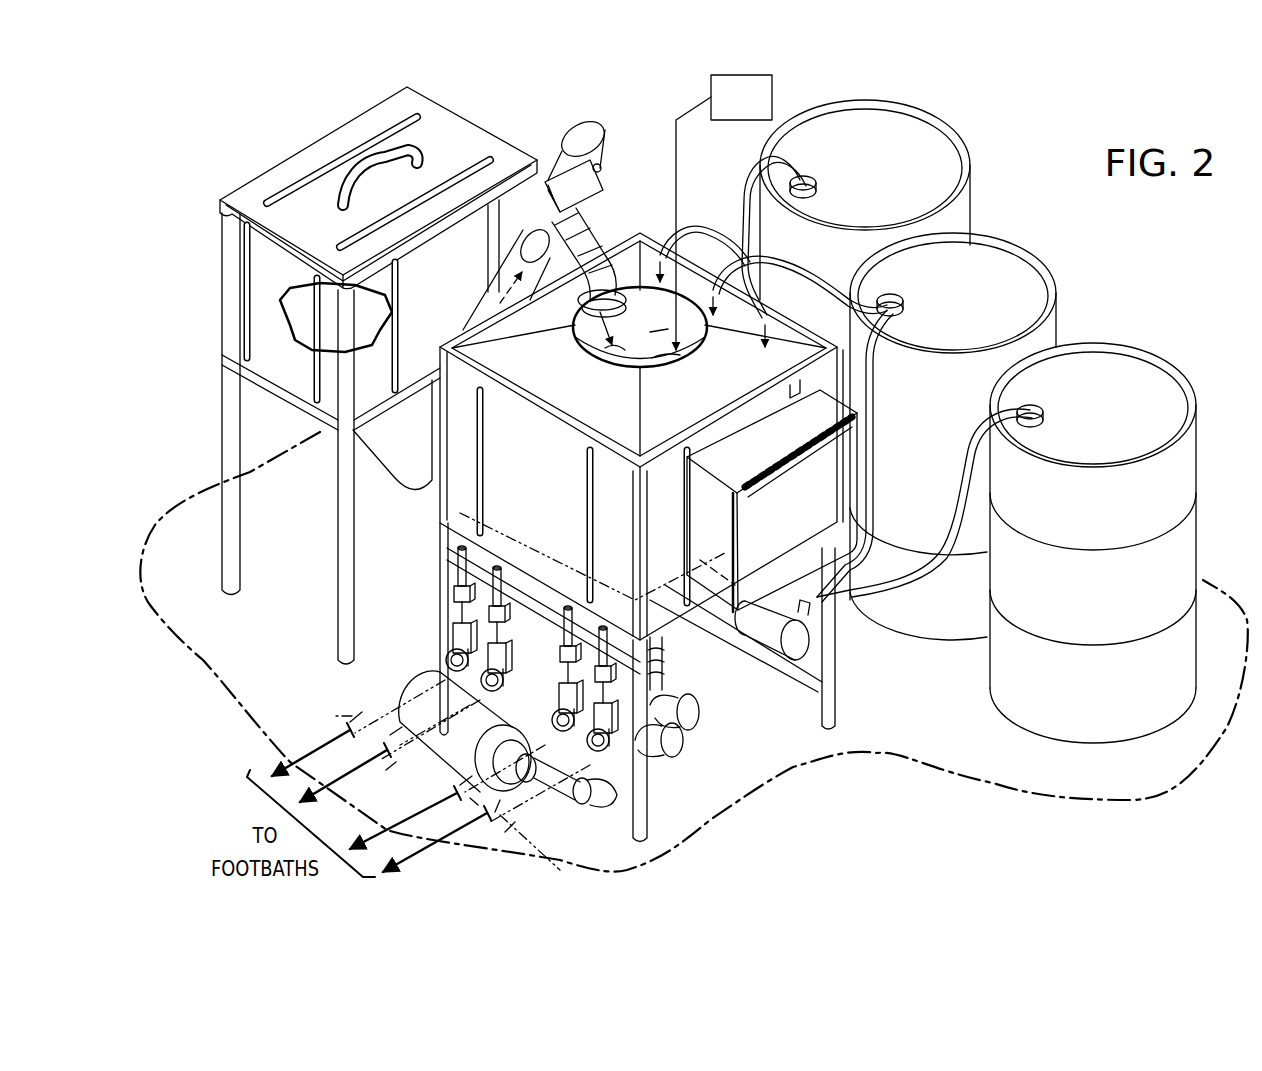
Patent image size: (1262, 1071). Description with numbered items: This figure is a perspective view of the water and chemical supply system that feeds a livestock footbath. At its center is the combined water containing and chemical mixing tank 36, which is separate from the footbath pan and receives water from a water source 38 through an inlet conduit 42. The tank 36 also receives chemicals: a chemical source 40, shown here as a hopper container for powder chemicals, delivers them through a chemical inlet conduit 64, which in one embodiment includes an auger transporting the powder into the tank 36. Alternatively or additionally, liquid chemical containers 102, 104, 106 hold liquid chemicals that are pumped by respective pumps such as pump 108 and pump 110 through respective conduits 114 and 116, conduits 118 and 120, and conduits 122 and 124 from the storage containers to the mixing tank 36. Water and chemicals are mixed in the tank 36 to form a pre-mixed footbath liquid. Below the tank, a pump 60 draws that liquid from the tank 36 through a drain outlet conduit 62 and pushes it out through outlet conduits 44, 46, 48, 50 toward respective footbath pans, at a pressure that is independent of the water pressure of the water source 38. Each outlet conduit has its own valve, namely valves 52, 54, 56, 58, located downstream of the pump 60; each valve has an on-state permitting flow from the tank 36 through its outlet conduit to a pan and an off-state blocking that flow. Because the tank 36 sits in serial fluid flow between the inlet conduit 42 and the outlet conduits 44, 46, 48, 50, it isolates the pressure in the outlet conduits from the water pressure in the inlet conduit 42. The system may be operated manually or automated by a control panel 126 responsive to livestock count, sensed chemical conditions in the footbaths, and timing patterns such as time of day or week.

The combined water containing and chemical mixing tank 36 is at (417, 525).
The water source 38 is at (683, 84).
The chemical source 40 is at (180, 277).
The inlet conduit 42 is at (647, 125).
The outlet conduit 44 is at (372, 706).
The outlet conduit 46 is at (416, 757).
The outlet conduit 48 is at (457, 823).
The outlet conduit 50 is at (515, 825).
The valve 52 is at (418, 660).
The valve 54 is at (499, 665).
The valve 56 is at (530, 708).
The valve 58 is at (597, 745).
The pump 60 is at (420, 782).
The drain outlet conduit 62 is at (660, 750).
The chemical inlet conduit 64 is at (572, 302).
The liquid chemical container 102 is at (1157, 350).
The liquid chemical container 104 is at (973, 434).
The liquid chemical container 106 is at (964, 137).
The pump 108 is at (760, 632).
The pump 110 is at (698, 640).
The conduit 114 is at (972, 478).
The conduit 116 is at (875, 466).
The conduit 118 is at (895, 295).
The conduit 120 is at (775, 257).
The conduit 122 is at (730, 160).
The conduit 124 is at (708, 198).
The control panel 126 is at (780, 530).